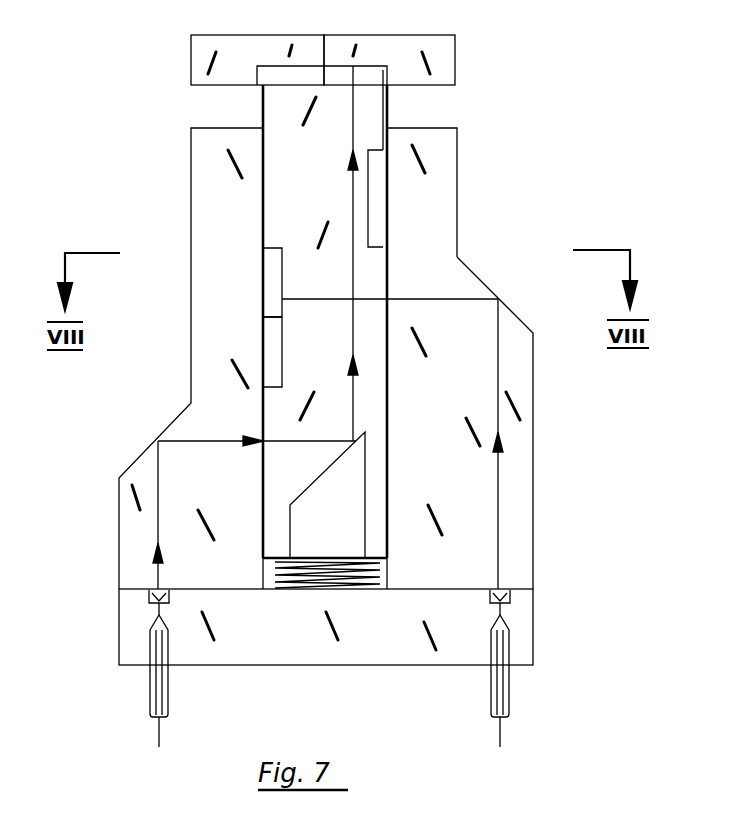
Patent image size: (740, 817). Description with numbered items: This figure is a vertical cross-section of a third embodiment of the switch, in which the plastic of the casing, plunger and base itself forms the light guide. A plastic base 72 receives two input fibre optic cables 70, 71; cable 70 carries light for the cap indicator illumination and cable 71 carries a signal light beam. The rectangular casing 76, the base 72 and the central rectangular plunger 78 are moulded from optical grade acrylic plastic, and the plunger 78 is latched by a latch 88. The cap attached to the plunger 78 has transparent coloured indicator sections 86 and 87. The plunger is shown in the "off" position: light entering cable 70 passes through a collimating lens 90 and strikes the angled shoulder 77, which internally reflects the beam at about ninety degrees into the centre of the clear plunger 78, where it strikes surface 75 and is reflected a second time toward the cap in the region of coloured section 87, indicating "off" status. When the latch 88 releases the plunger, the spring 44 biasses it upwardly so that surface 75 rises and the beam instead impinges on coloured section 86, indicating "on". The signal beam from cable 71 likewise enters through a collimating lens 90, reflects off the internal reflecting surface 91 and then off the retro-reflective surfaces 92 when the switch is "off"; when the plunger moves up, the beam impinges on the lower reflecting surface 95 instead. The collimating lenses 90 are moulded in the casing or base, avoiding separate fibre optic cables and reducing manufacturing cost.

The transparent coloured indicator section 86 is at (207, 56).
The transparent coloured indicator section 87 is at (437, 57).
The plunger 78 is at (290, 126).
The rectangular casing 76 is at (437, 158).
The latch 88 is at (380, 212).
The internal retro-reflective surface 92 is at (272, 280).
The lower reflecting surface 95 is at (267, 349).
The internal reflecting surface 91 is at (483, 281).
The angled shoulder 77 is at (172, 424).
The surface 75 is at (327, 472).
The spring 44 is at (382, 573).
The collimating lens 90 is at (146, 601).
The plastic base 72 is at (536, 652).
The input fibre optic cable 70 is at (150, 690).
The input fibre optic cable 71 is at (512, 690).